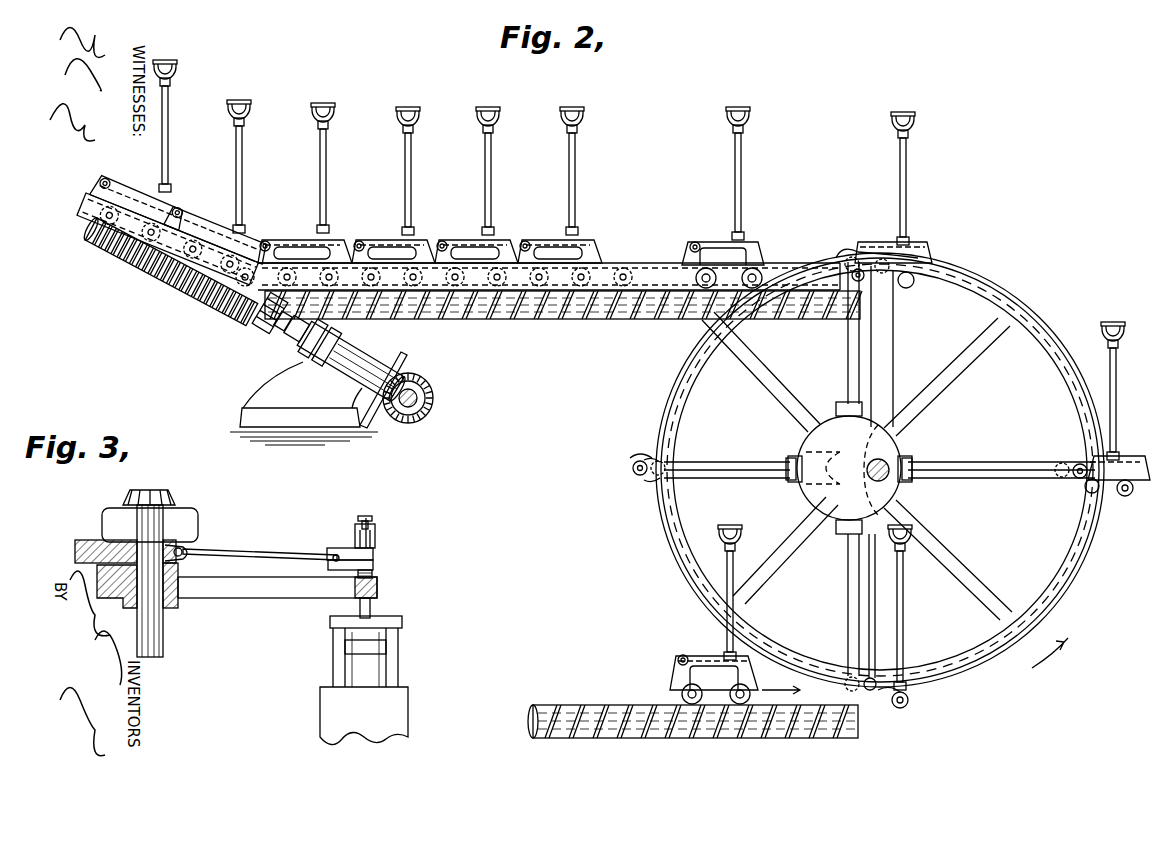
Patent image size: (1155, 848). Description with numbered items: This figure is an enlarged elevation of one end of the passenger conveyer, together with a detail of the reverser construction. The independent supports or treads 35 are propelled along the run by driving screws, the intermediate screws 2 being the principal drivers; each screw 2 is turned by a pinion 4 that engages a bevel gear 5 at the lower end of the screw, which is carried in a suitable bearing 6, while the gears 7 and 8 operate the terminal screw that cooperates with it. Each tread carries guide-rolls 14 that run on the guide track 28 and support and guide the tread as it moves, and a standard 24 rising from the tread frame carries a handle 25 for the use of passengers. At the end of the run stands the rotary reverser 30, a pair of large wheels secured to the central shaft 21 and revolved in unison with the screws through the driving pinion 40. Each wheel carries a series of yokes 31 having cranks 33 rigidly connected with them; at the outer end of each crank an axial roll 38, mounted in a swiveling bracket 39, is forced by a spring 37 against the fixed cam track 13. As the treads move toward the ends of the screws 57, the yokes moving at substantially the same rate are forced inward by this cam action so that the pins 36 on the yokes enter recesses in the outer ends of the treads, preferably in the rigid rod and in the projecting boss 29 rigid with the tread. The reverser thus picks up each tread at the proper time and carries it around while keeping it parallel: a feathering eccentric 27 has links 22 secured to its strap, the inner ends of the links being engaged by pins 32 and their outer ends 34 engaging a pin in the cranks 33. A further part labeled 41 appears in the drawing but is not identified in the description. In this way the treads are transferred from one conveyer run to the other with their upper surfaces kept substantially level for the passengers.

In FIG. 2, the intermediate screw 2 is at (162, 262).
In FIG. 2, the pinion 4 is at (416, 420).
In FIG. 2, the bevel gear 5 is at (378, 418).
In FIG. 2, the bearing 6 is at (310, 372).
In FIG. 2, the gear 7 is at (276, 332).
In FIG. 2, the gear 8 is at (258, 318).
In FIG. 3, the cam track 13 is at (372, 518).
In FIG. 2, the guide-roll 14 is at (690, 258).
In FIG. 2, the central shaft 21 is at (888, 458).
In FIG. 3, the central shaft 21 is at (160, 630).
In FIG. 2, the links 22 is at (1000, 478).
In FIG. 3, the links 22 is at (265, 555).
In FIG. 2, the standard 24 is at (490, 182).
In FIG. 2, the handle 25 is at (578, 114).
In FIG. 2, the feathering eccentric 27 is at (806, 500).
In FIG. 2, the guide track 28 is at (103, 190).
In FIG. 2, the projecting boss 29 is at (266, 244).
In FIG. 2, the reverser 30 is at (884, 350).
In FIG. 3, the reverser 30 is at (292, 596).
In FIG. 2, the yokes 31 is at (852, 252).
In FIG. 3, the yokes 31 is at (380, 618).
In FIG. 2, the pins 32 is at (918, 484).
In FIG. 3, the pins 32 is at (184, 556).
In FIG. 2, the cranks 33 is at (652, 476).
In FIG. 3, the cranks 33 is at (347, 542).
In FIG. 3, the outer ends of links 34 is at (372, 562).
In FIG. 2, the treads 35 is at (372, 240).
In FIG. 3, the treads 35 is at (364, 716).
In FIG. 3, the pins 36 is at (388, 628).
In FIG. 3, the springs 37 is at (373, 574).
In FIG. 3, the axial roll 38 is at (375, 532).
In FIG. 3, the swiveling bracket 39 is at (356, 522).
In FIG. 3, the driving pinion 40 is at (172, 494).
In FIG. 3, the bearing block 41 is at (88, 540).
In FIG. 2, the terminal screw 57 is at (704, 735).